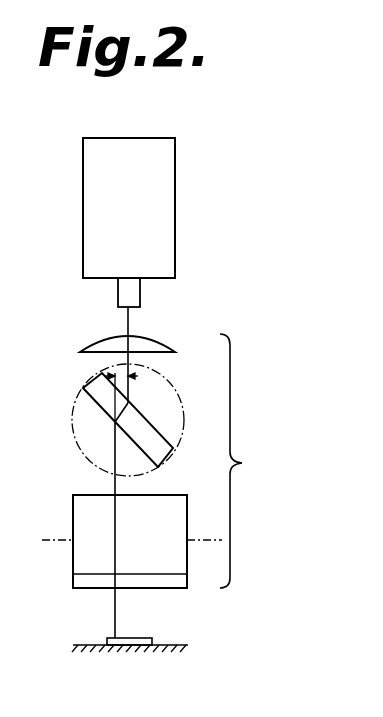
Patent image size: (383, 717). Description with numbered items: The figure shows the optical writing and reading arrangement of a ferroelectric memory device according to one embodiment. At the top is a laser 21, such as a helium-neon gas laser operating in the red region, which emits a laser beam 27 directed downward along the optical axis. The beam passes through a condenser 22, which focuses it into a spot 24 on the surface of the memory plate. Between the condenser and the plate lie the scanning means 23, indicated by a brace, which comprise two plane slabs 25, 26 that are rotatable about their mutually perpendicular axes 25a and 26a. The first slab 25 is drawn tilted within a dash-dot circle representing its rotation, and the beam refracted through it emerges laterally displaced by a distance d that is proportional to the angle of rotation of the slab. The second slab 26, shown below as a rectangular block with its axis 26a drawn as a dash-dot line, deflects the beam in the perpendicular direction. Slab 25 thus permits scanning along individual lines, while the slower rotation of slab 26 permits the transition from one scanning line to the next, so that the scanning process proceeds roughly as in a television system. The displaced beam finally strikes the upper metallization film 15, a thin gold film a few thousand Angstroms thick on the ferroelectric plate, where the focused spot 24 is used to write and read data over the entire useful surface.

The laser 21 is at (140, 211).
The laser beam 27 is at (127, 318).
The condenser 22 is at (150, 347).
The deflection distance d is at (108, 374).
The plane slab 25 is at (100, 405).
The rotation axis of first slab 25a is at (125, 419).
The scanning means 23 is at (174, 461).
The plane slab 26 is at (98, 555).
The rotation axis of second slab 26a is at (120, 524).
The spot 24 is at (113, 637).
The upper metallization film 15 is at (138, 641).